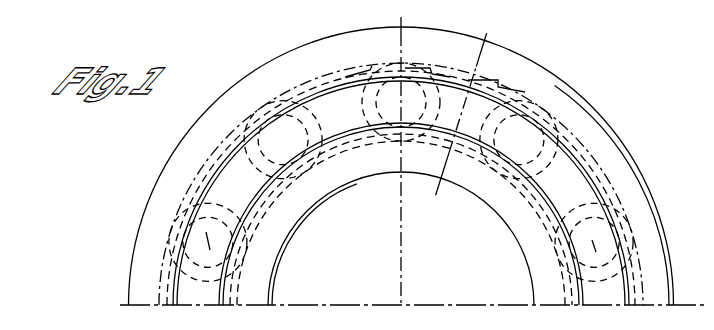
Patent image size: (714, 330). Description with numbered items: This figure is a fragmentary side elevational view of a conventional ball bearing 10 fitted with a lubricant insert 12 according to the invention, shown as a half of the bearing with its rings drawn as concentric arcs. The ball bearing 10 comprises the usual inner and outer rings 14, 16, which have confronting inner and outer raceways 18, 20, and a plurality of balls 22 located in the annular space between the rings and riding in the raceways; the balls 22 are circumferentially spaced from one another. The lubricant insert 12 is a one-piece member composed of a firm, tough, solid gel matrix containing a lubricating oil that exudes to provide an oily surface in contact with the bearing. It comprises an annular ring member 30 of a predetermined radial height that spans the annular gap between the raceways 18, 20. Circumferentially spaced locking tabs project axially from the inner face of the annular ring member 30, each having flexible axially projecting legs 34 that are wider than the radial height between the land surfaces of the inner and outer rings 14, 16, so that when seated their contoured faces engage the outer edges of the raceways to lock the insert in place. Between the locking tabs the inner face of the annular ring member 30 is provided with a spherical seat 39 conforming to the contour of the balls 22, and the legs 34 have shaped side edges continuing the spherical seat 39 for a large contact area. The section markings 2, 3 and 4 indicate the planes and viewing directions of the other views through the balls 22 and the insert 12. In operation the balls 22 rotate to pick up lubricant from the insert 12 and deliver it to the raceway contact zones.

The ball bearing 10 is at (630, 151).
The lubricant insert 12 is at (212, 190).
The inner ring 14 is at (280, 249).
The outer ring 16 is at (258, 84).
The inner raceway 18 is at (401, 214).
The outer raceway 20 is at (508, 96).
The balls 22 is at (522, 175).
The annular ring member 30 is at (527, 117).
The legs 34 is at (595, 128).
The spherical seat 39 is at (553, 113).
The section line of FIG. 2 is at (250, 255).
The section line of FIG. 3 is at (398, 17).
The section line of FIG. 4 is at (487, 29).